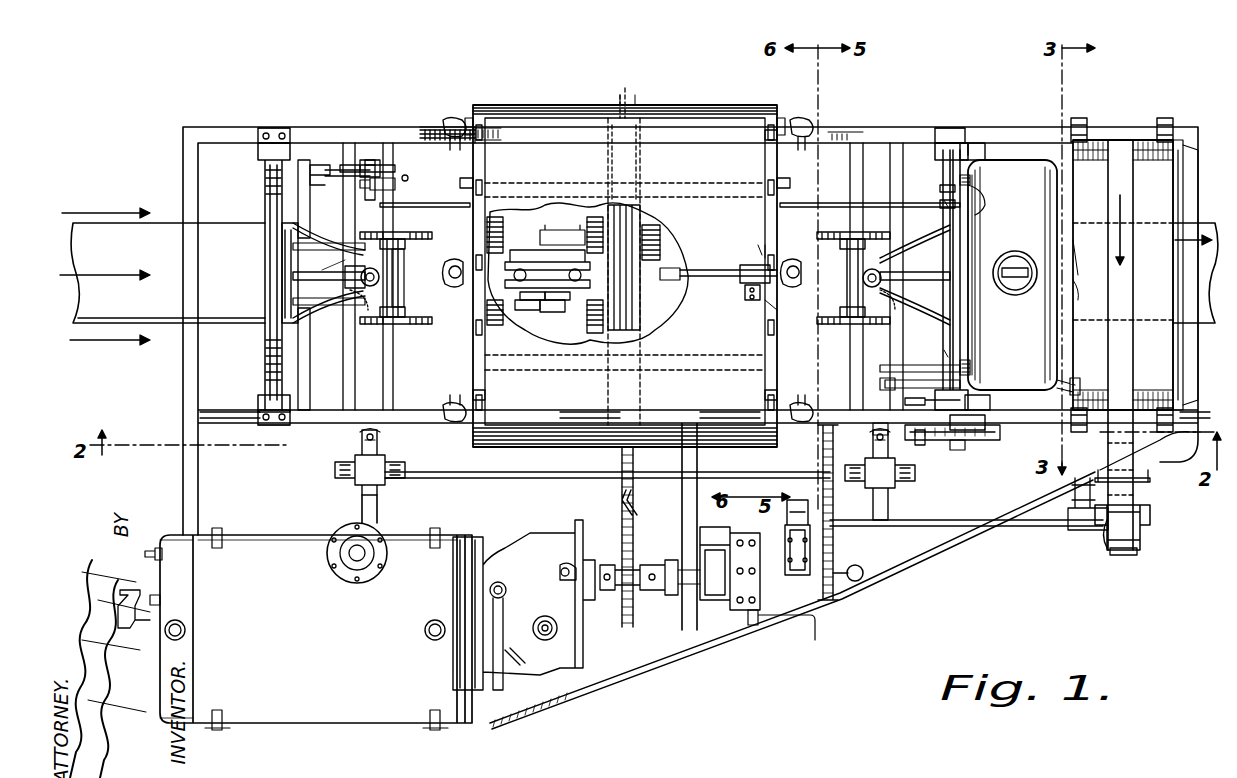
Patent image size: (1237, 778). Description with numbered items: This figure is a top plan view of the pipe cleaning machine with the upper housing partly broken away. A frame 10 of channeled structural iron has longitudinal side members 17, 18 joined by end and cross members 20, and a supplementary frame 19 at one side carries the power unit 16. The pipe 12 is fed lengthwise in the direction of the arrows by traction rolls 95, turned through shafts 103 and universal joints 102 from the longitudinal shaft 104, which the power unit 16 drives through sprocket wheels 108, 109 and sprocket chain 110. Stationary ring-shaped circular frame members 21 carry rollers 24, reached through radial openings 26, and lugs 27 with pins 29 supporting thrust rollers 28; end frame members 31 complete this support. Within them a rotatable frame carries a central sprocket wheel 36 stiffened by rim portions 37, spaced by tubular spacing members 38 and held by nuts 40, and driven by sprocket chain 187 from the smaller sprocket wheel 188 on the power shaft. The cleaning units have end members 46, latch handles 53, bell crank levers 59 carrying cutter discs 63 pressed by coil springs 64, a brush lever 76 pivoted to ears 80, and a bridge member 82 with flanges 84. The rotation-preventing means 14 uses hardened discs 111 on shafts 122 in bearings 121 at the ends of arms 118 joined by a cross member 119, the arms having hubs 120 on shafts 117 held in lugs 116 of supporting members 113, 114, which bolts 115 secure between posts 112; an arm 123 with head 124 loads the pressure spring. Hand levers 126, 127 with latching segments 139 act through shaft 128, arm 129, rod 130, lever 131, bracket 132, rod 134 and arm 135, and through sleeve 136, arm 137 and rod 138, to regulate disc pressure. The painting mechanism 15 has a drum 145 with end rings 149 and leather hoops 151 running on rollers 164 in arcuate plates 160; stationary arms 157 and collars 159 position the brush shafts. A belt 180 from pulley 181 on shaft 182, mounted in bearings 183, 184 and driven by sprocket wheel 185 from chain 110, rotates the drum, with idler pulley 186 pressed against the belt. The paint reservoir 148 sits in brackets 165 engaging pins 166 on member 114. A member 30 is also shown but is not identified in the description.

The frame 10 is at (246, 124).
The pipe 12 is at (639, 276).
The pipe rotation preventing means 14 is at (395, 330).
The painting and brushing mechanism 15 is at (1012, 275).
The power unit 16 is at (295, 629).
The longitudinal side member 17 is at (440, 127).
The longitudinal side member 18 is at (318, 423).
The supplementary frame 19 is at (668, 655).
The end and cross members 20 is at (183, 385).
The circular frame members 21 is at (467, 118).
The spaced rollers 24 is at (775, 310).
The radial openings 26 is at (785, 135).
The laterally extending lugs 27 is at (800, 120).
The thrust rollers 28 is at (805, 134).
The pins 29 is at (820, 130).
The drive shaft 30 is at (720, 268).
The end frame members 31 is at (450, 262).
The sprocket wheel 36 is at (625, 259).
The radial flange or rim portion 37 is at (612, 135).
The tubular spacing members 38 is at (544, 183).
The nuts 40 is at (465, 185).
The end members 46 is at (615, 210).
The radially extending arms 53 is at (545, 232).
The bell crank levers 59 is at (670, 268).
The pipe cleaning discs 63 is at (520, 288).
The coil spring 64 is at (668, 222).
The lever 76 is at (555, 300).
The ears 80 is at (525, 310).
The bridge member 82 is at (530, 300).
The flanges 84 is at (550, 312).
The circumferentially extending grooves 95 is at (355, 305).
The universal joints 102 is at (380, 440).
The shaft 103 is at (370, 385).
The longitudinally extending shaft 104 is at (488, 478).
The sprocket wheel 108 is at (873, 430).
The sprocket wheel 109 is at (848, 585).
The sprocket chain 110 is at (833, 545).
The hardened discs 111 is at (420, 240).
The upright supporting posts 112 is at (290, 150).
The supporting member 113 is at (265, 192).
The supporting member 114 is at (980, 145).
The bolts 115 is at (282, 130).
The spaced lugs 116 is at (298, 228).
The shaft 117 is at (270, 350).
The spaced arms 118 is at (343, 248).
The cross member 119 is at (385, 280).
The hub portions 120 is at (290, 238).
The bearings 121 is at (404, 305).
The shaft 122 is at (400, 272).
The arm 123 is at (930, 252).
The enlarged head 124 is at (355, 288).
The hand operated lever 126 is at (958, 450).
The hand operated lever 127 is at (930, 445).
The shaft 128 is at (948, 178).
The downwardly extending arm 129 is at (948, 207).
The longitudinally extending rod 130 is at (435, 207).
The lever 131 is at (395, 183).
The bracket 132 is at (380, 172).
The rod 134 is at (360, 165).
The arm 135 is at (630, 276).
The sleeve portion 136 is at (990, 402).
The arm 137 is at (880, 368).
The vertically extending rod 138 is at (885, 384).
The segments 139 is at (965, 440).
The drum 145 is at (1135, 265).
The paint reservoir 148 is at (1014, 291).
The end ring portions 149 is at (1090, 259).
The bands or hoops 151 is at (1090, 290).
The stationary arm 157 is at (1180, 150).
The collars 159 is at (1072, 385).
The arcuate plates 160 is at (1095, 140).
The rollers 164 is at (1080, 118).
The brackets 165 is at (970, 180).
The pins 166 is at (982, 212).
The belt 180 is at (1140, 500).
The pulley 181 is at (1140, 535).
The shaft 182 is at (1025, 527).
The bearing 183 is at (1080, 530).
The bearing 184 is at (790, 530).
The sprocket wheel 185 is at (787, 512).
The idler pulley 186 is at (1140, 470).
The sprocket chain 187 is at (622, 493).
The sprocket wheel 188 is at (625, 600).